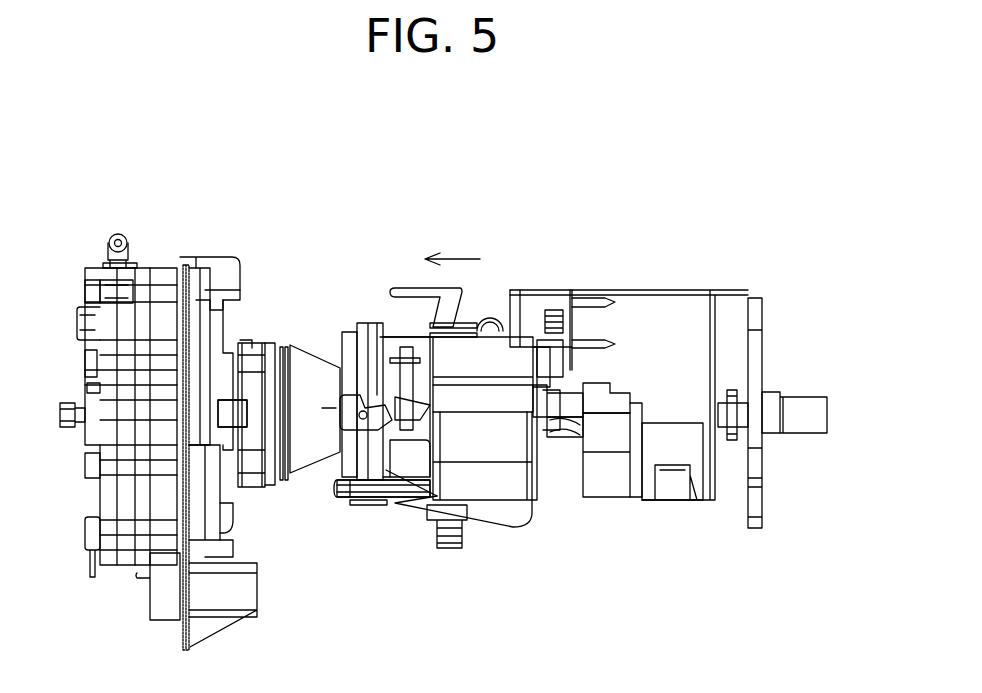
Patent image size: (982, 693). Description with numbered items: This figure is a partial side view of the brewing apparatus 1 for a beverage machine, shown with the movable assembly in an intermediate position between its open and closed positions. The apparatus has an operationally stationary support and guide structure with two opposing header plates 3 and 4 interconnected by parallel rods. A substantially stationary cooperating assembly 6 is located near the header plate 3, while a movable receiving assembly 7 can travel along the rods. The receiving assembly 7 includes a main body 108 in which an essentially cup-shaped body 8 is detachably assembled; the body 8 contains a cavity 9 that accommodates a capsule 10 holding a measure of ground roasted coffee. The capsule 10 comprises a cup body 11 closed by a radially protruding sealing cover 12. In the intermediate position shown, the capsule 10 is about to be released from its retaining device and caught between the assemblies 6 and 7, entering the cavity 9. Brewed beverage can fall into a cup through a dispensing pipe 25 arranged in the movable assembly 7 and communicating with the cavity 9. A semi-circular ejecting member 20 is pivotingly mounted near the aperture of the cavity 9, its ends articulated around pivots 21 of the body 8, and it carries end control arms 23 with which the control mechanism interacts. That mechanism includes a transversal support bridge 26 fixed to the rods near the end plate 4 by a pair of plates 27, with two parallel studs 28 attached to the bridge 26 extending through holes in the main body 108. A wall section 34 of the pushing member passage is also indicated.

The brewing apparatus 1 is at (548, 218).
The header plate 3 is at (215, 323).
The header plate 4 is at (755, 348).
The cooperating assembly 6 is at (258, 328).
The movable receiving assembly 7 is at (400, 503).
The cup-shaped body 8 is at (392, 325).
The cavity 9 is at (336, 408).
The capsule 10 is at (315, 352).
The cup body 11 is at (303, 452).
The sealing cover 12 is at (290, 486).
The ejecting member 20 is at (363, 337).
The pivot 21 is at (352, 418).
The control arm 23 is at (456, 361).
The dispensing pipe 25 is at (438, 550).
The transversal support bridge 26 is at (608, 503).
The plate 27 is at (597, 392).
The stud 28 is at (572, 398).
The distal section of external vertical wall 34 is at (418, 407).
The main body 108 is at (505, 480).